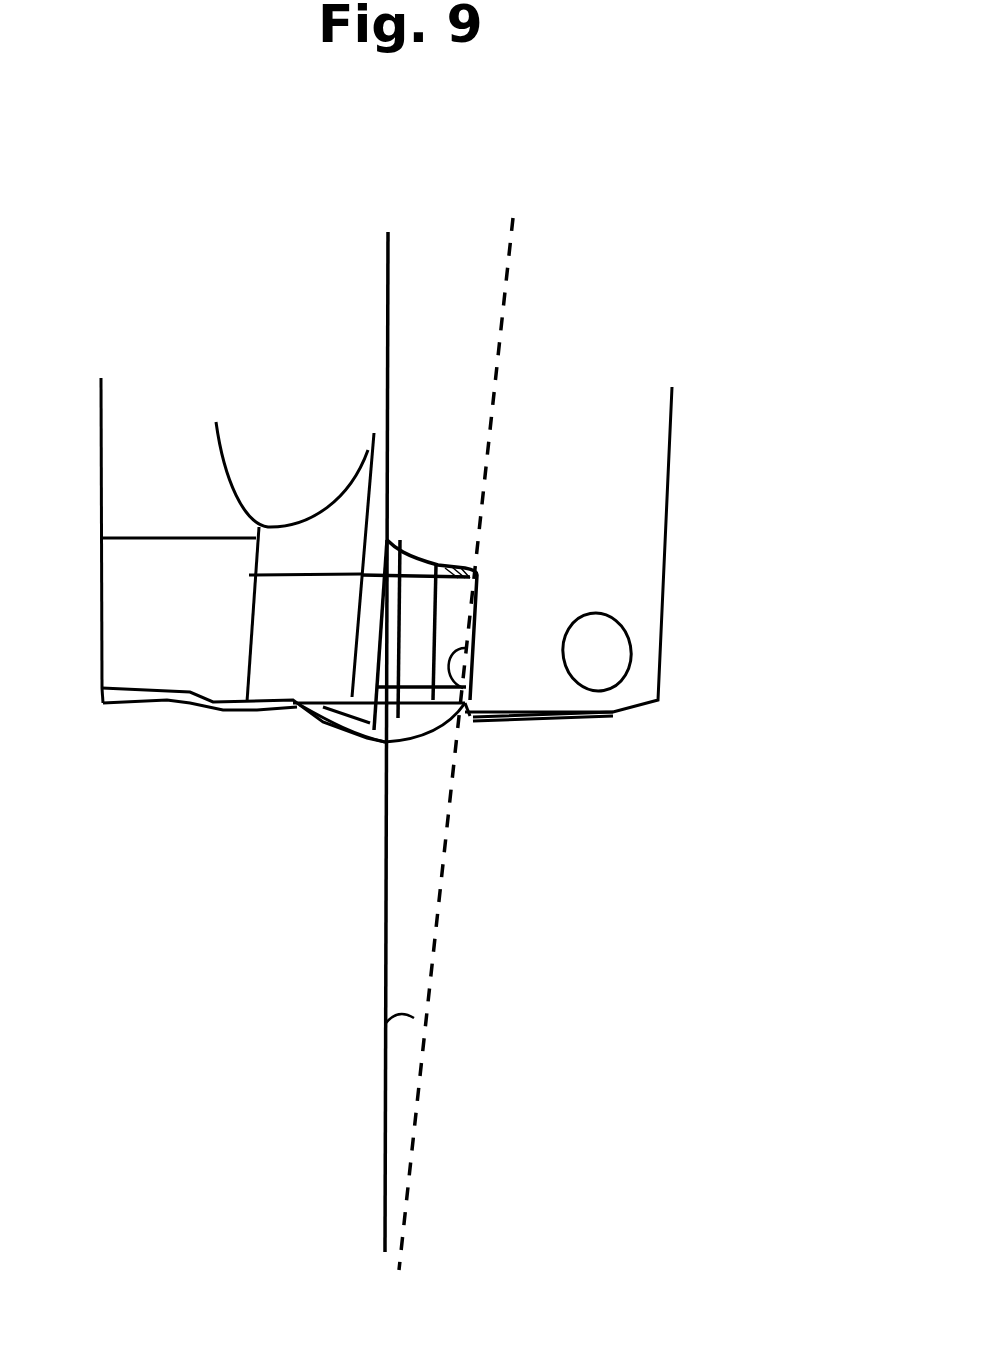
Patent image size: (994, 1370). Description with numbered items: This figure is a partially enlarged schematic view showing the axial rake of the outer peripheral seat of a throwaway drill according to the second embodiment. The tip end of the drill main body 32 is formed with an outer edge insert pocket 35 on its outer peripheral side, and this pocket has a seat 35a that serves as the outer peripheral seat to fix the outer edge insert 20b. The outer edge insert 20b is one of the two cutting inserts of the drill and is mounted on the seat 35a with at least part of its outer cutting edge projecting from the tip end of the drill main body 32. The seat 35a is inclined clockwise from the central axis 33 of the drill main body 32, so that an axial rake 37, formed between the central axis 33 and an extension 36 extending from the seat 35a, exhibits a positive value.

The drill main body 32 is at (610, 543).
The outer edge insert 20b is at (425, 620).
The seat 35a is at (460, 703).
The outer edge insert pocket 35 is at (455, 781).
The central axis 33 is at (383, 955).
The extension 36 is at (435, 940).
The axial rake 37 is at (407, 1021).